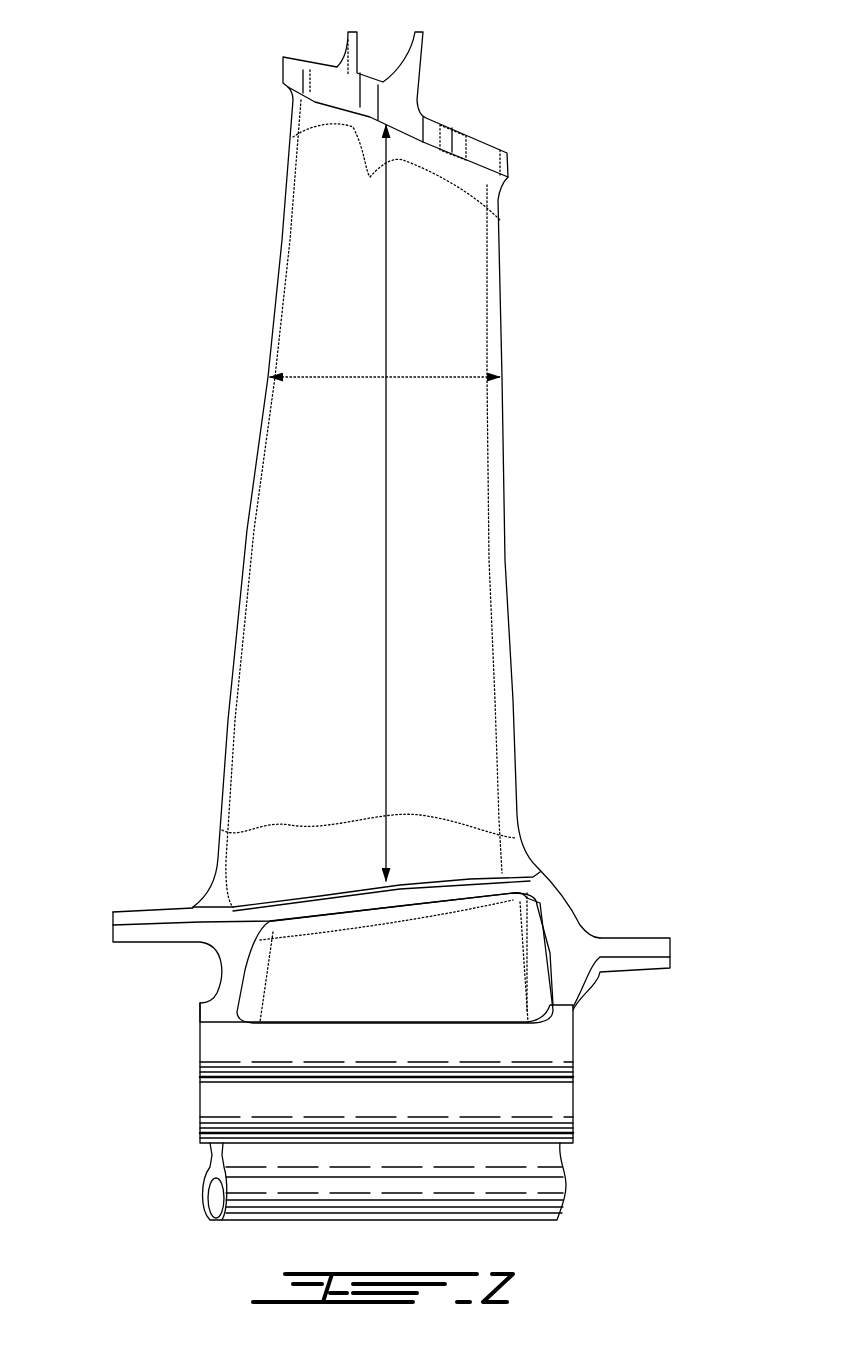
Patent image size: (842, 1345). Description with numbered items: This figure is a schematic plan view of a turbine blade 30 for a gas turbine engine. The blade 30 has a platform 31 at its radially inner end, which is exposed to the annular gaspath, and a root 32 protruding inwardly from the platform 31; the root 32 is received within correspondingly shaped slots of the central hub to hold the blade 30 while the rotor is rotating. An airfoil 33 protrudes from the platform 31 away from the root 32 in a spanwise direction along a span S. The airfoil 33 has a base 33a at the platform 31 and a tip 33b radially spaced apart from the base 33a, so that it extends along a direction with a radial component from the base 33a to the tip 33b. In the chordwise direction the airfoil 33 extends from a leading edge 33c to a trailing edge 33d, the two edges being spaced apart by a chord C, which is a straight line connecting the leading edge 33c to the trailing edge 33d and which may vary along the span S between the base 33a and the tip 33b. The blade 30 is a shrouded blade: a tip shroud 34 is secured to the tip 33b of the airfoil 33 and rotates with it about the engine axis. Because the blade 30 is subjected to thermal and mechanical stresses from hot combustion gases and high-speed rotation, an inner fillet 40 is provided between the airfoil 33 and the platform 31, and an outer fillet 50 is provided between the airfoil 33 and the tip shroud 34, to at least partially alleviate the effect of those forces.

The blade 30 is at (167, 225).
The platform 31 is at (558, 865).
The root 32 is at (615, 1065).
The airfoil 33 is at (243, 500).
The base 33a is at (478, 847).
The tip 33b is at (350, 130).
The leading edge 33c is at (512, 660).
The trailing edge 33d is at (243, 583).
The tip shroud 34 is at (527, 178).
The inner fillet 40 is at (265, 878).
The outer fillet 50 is at (455, 172).
The chord C is at (433, 373).
The span S is at (386, 477).